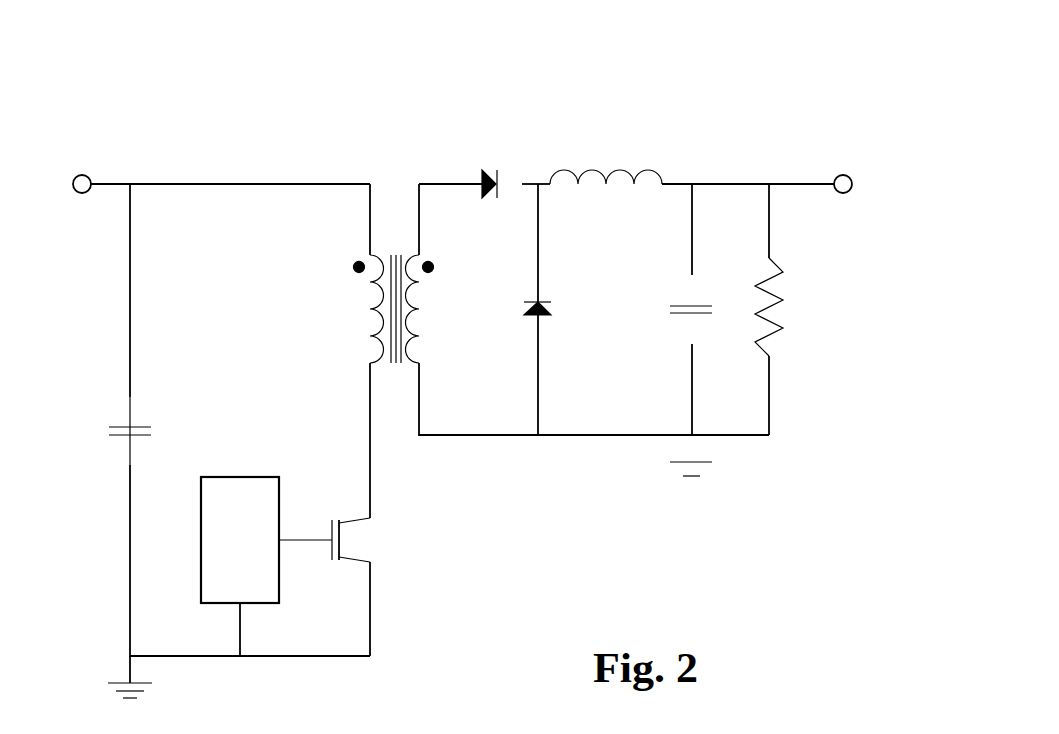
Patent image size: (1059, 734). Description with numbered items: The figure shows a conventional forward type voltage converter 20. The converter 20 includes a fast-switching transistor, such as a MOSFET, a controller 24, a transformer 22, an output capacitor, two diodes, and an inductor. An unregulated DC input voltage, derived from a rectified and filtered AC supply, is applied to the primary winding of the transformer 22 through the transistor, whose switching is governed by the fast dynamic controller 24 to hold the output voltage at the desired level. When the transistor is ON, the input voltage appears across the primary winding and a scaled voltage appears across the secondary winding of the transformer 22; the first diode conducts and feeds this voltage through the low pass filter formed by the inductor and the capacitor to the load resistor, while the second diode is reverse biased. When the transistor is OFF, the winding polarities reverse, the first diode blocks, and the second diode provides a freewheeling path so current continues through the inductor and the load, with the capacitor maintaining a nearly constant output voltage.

The converter 20 is at (743, 110).
The transformer 22 is at (390, 237).
The controller 24 is at (260, 477).